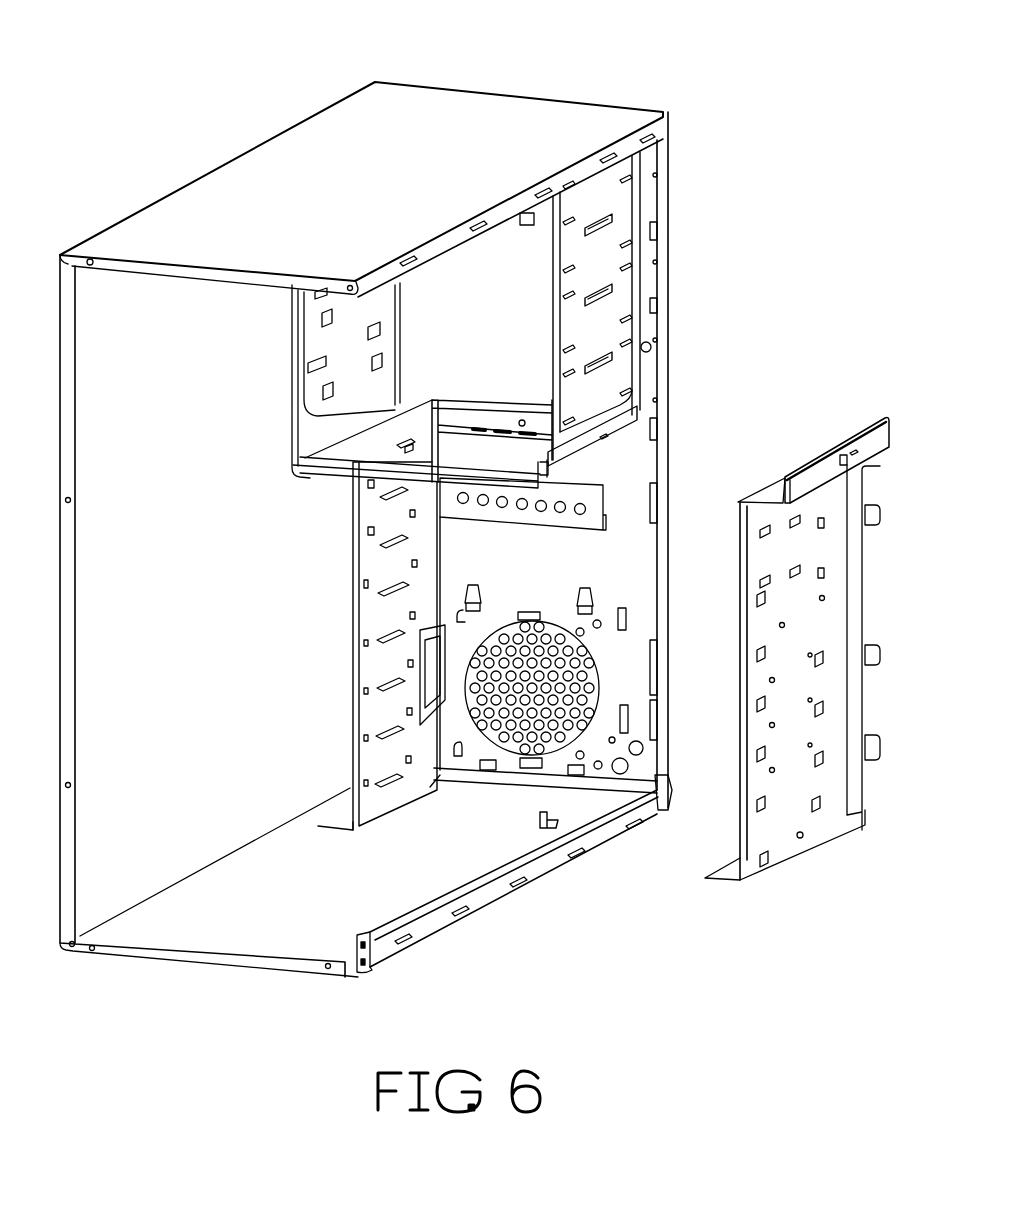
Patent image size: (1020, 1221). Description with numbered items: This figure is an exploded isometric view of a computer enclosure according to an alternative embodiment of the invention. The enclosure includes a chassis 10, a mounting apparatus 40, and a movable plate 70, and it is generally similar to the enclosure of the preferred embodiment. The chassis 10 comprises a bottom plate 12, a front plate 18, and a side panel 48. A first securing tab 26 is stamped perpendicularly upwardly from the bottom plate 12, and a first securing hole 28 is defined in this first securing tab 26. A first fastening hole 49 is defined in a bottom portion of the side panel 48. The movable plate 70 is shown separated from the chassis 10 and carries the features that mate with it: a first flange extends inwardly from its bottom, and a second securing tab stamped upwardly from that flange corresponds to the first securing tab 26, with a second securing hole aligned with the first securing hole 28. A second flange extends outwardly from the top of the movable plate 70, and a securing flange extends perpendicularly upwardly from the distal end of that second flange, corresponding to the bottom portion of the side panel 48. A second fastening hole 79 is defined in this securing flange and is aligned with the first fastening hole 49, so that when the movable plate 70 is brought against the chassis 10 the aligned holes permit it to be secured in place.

The chassis 10 is at (516, 80).
The bottom plate 12 is at (222, 912).
The front plate 18 is at (612, 559).
The first securing tab 26 is at (575, 816).
The first securing hole 28 is at (552, 818).
The mounting apparatus 40 is at (643, 292).
The side panel 48 is at (620, 364).
The first fastening hole 49 is at (610, 438).
The movable plate 70 is at (870, 416).
The second fastening hole 79 is at (847, 440).